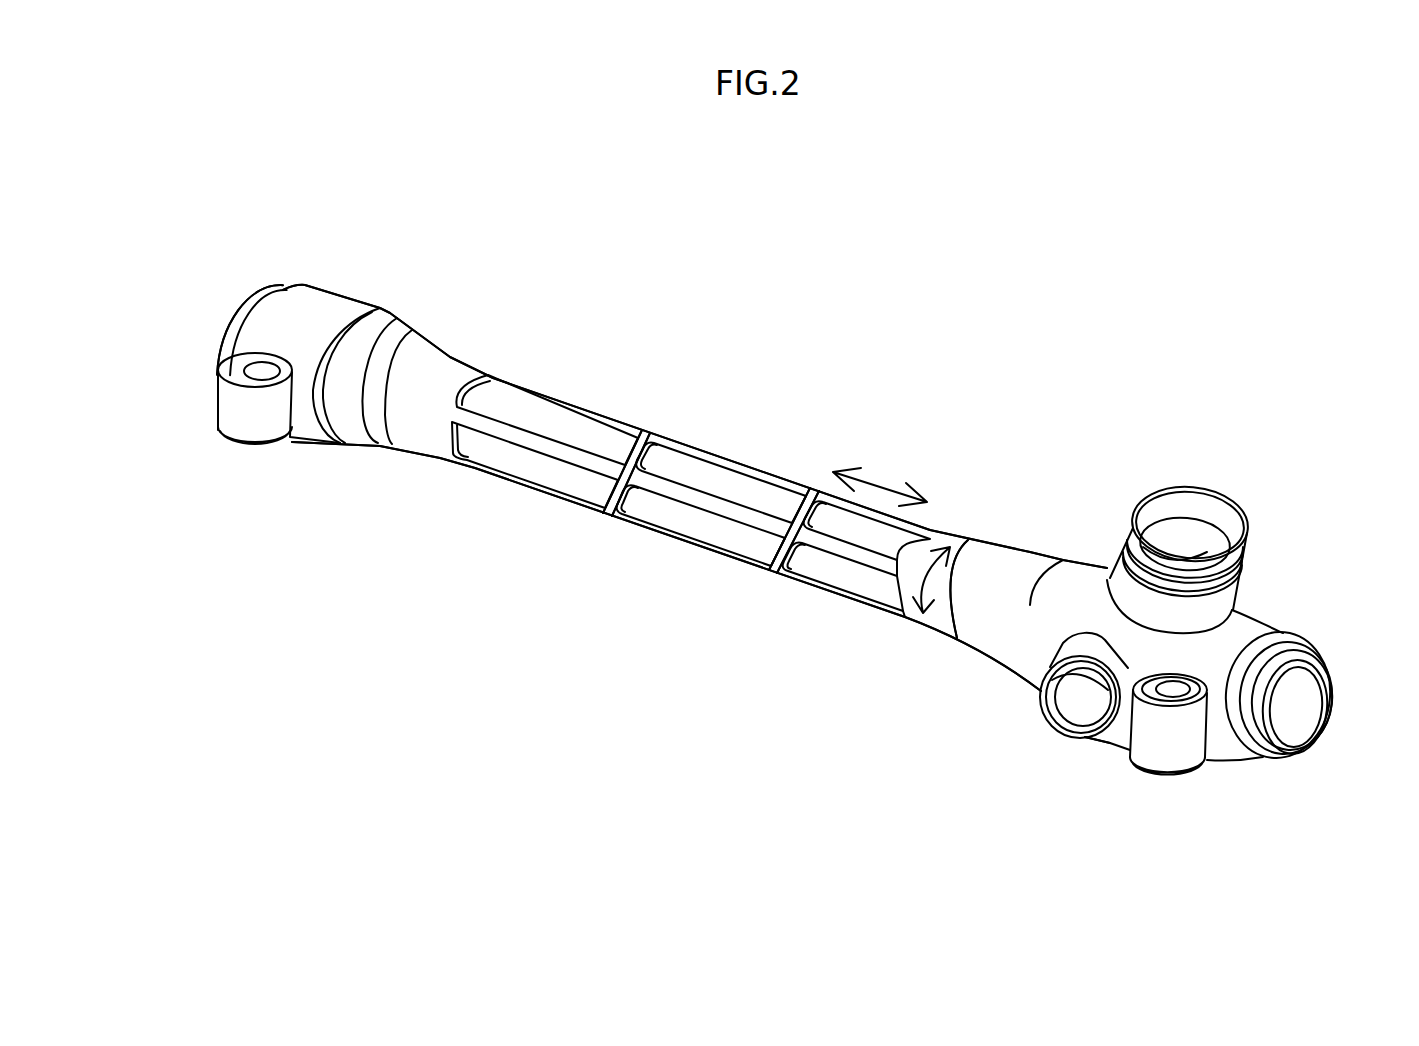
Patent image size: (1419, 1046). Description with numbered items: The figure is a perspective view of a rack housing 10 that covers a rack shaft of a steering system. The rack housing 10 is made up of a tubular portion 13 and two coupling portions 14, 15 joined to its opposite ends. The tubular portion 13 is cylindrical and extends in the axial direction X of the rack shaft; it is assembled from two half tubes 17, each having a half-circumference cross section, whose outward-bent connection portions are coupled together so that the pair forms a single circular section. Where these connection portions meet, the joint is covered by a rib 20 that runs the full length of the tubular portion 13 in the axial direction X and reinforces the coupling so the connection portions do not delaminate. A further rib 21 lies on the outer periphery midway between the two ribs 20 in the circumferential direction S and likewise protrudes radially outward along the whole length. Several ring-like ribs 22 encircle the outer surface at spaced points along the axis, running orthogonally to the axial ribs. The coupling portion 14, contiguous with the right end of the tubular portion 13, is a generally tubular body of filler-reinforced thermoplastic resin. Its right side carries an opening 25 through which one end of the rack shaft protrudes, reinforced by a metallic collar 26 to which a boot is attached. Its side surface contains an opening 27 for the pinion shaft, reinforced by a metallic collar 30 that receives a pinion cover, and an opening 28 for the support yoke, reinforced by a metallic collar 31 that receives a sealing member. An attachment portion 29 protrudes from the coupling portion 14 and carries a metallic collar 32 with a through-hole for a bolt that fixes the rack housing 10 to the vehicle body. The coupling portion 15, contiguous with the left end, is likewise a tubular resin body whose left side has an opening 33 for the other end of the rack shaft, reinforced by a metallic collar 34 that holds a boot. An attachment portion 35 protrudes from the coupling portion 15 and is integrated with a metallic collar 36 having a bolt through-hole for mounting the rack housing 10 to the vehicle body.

The rack housing 10 is at (981, 278).
The tubular portion 13 is at (676, 551).
The coupling portion 14 is at (1277, 612).
The coupling portion 15 is at (357, 298).
The half tube 17 is at (500, 400).
The rib 20 is at (547, 443).
The rib 21 is at (687, 443).
The ring-like rib 22 is at (420, 440).
The opening 25 is at (1293, 710).
The metallic collar 26 is at (1293, 753).
The opening 27 is at (1202, 510).
The opening 28 is at (1060, 700).
The attachment portion 29 is at (1153, 743).
The metallic collar 30 is at (1143, 500).
The metallic collar 31 is at (1067, 728).
The metallic collar 32 is at (1196, 772).
The opening 33 is at (257, 300).
The metallic collar 34 is at (222, 340).
The attachment portion 35 is at (232, 407).
The metallic collar 36 is at (282, 446).
The axial direction X is at (880, 482).
The circumferential direction S is at (912, 605).